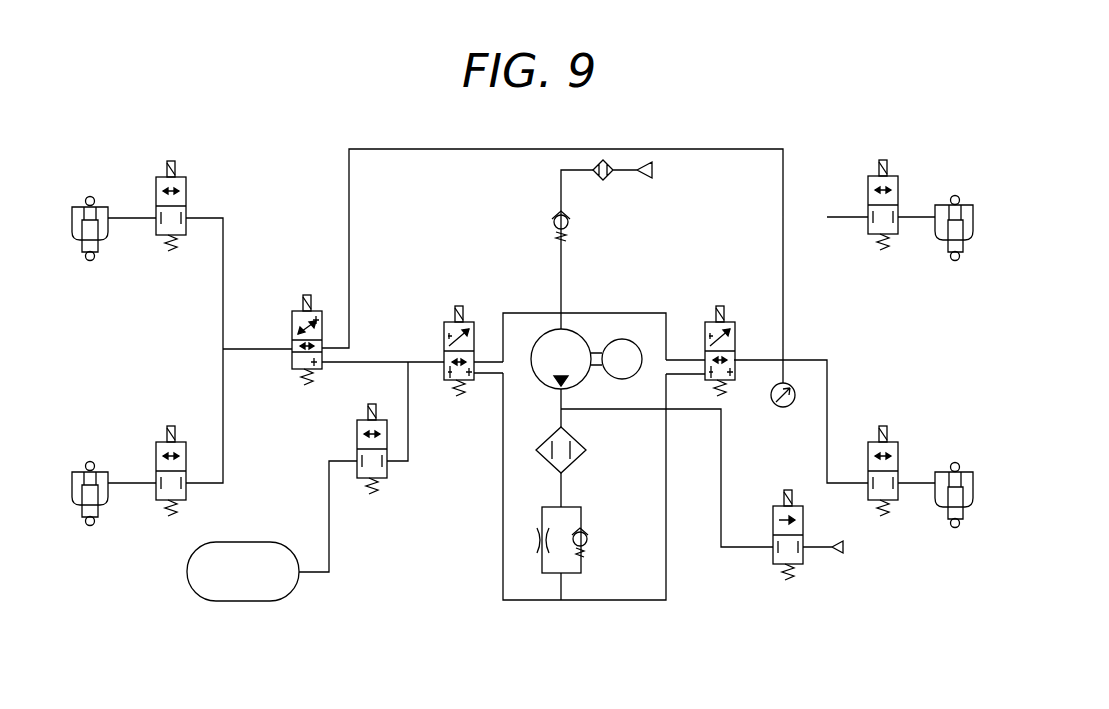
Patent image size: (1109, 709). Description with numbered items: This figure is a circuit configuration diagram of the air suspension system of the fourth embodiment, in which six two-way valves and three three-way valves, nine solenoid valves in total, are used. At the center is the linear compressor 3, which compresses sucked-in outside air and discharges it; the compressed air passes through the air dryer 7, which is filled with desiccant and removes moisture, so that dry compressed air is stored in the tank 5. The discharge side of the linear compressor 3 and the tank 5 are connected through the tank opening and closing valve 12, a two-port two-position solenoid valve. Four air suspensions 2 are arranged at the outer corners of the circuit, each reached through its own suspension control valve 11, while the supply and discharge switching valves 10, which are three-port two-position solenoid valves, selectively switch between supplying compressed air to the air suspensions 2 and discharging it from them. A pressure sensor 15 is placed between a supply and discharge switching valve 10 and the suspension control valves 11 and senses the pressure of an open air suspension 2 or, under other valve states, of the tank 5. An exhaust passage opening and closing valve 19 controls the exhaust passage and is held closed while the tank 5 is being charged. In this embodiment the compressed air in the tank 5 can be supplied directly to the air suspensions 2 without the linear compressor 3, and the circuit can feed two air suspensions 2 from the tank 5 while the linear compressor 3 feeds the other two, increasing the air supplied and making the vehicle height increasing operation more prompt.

The air suspension 2 is at (100, 206).
The linear compressor 3 is at (577, 314).
The tank 5 is at (243, 601).
The air dryer 7 is at (553, 466).
The supply and discharge switching valve 10 is at (470, 320).
The suspension control valve 11 is at (182, 176).
The tank opening and closing valve 12 is at (357, 420).
The pressure sensor 15 is at (774, 401).
The exhaust passage opening and closing valve 19 is at (794, 506).